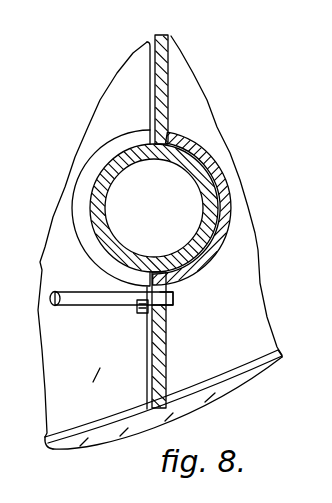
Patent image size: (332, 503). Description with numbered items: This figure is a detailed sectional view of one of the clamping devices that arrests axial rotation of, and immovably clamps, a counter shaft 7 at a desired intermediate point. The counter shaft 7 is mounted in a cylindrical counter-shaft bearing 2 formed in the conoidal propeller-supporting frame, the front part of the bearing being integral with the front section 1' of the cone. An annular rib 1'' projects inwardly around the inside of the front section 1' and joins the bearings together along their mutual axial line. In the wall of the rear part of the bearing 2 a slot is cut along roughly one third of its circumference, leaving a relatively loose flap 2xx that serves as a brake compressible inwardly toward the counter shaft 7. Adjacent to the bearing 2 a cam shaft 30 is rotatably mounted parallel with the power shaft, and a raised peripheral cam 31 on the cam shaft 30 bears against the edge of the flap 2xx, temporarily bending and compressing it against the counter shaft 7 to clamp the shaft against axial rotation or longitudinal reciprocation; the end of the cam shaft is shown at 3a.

The front section of the frame 1' is at (160, 242).
The annular rib 1'' is at (191, 221).
The counter-shaft bearing 2 is at (180, 143).
The counter shaft 7 is at (104, 209).
The flap 2xx is at (100, 263).
The cam shaft 30 is at (78, 306).
The cross bar end 3a is at (176, 298).
The cam 31 is at (143, 314).